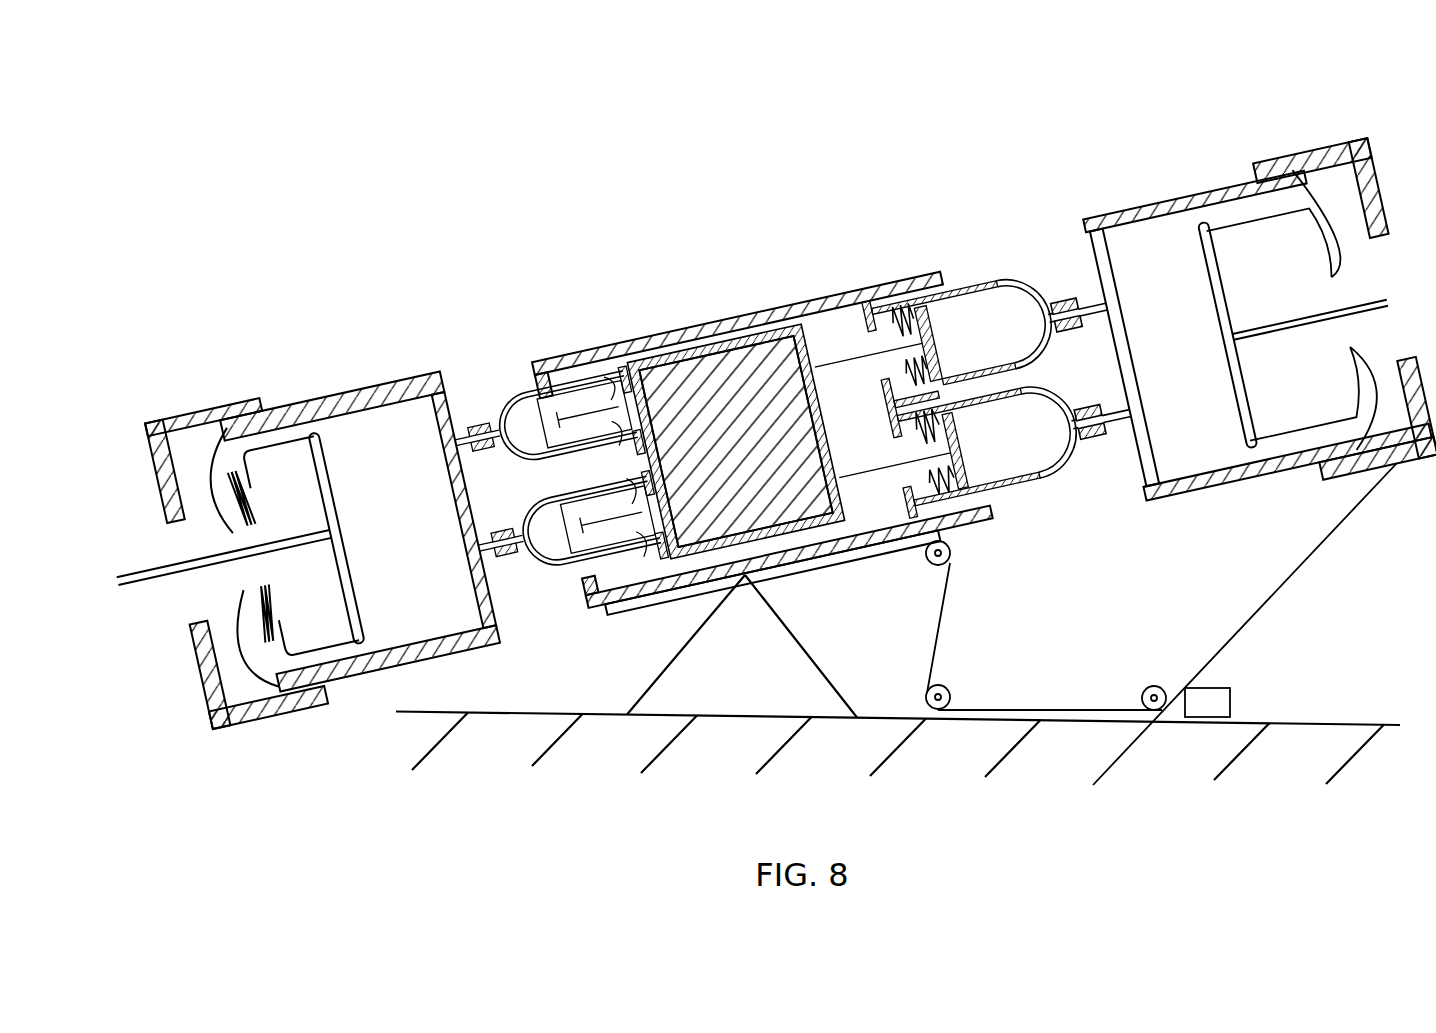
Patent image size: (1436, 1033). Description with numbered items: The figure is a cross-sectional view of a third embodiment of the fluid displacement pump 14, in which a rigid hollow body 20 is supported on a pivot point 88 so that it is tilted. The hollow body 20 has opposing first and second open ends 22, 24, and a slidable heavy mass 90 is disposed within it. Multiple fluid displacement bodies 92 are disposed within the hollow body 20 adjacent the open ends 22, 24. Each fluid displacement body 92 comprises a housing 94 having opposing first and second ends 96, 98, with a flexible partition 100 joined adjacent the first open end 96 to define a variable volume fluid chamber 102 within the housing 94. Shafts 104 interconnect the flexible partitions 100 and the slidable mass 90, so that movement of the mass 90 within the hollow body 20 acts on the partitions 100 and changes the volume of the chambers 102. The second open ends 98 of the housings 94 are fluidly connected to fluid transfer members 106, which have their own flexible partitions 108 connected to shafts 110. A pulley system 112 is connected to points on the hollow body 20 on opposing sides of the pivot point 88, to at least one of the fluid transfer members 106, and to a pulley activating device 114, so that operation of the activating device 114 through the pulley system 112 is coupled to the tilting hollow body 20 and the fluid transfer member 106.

The fluid displacement pump 14 is at (381, 266).
The rigid hollow body 20 is at (812, 296).
The first open end 22 is at (530, 358).
The second open end 24 is at (940, 272).
The pivot point 88 is at (757, 672).
The slidable heavy mass 90 is at (677, 380).
The fluid displacement bodies 92 is at (513, 400).
The housings 94 is at (1017, 277).
The first open ends 96 is at (884, 306).
The second open ends 98 is at (1060, 300).
The flexible partitions 100 is at (896, 305).
The variable volume fluid chambers 102 is at (963, 318).
The shafts 104 is at (822, 348).
The fluid transfer members 106 is at (1138, 222).
The flexible partitions 108 is at (1310, 197).
The shafts 110 is at (1259, 323).
The pulley system 112 is at (925, 718).
The pulley activating device 114 is at (1178, 720).